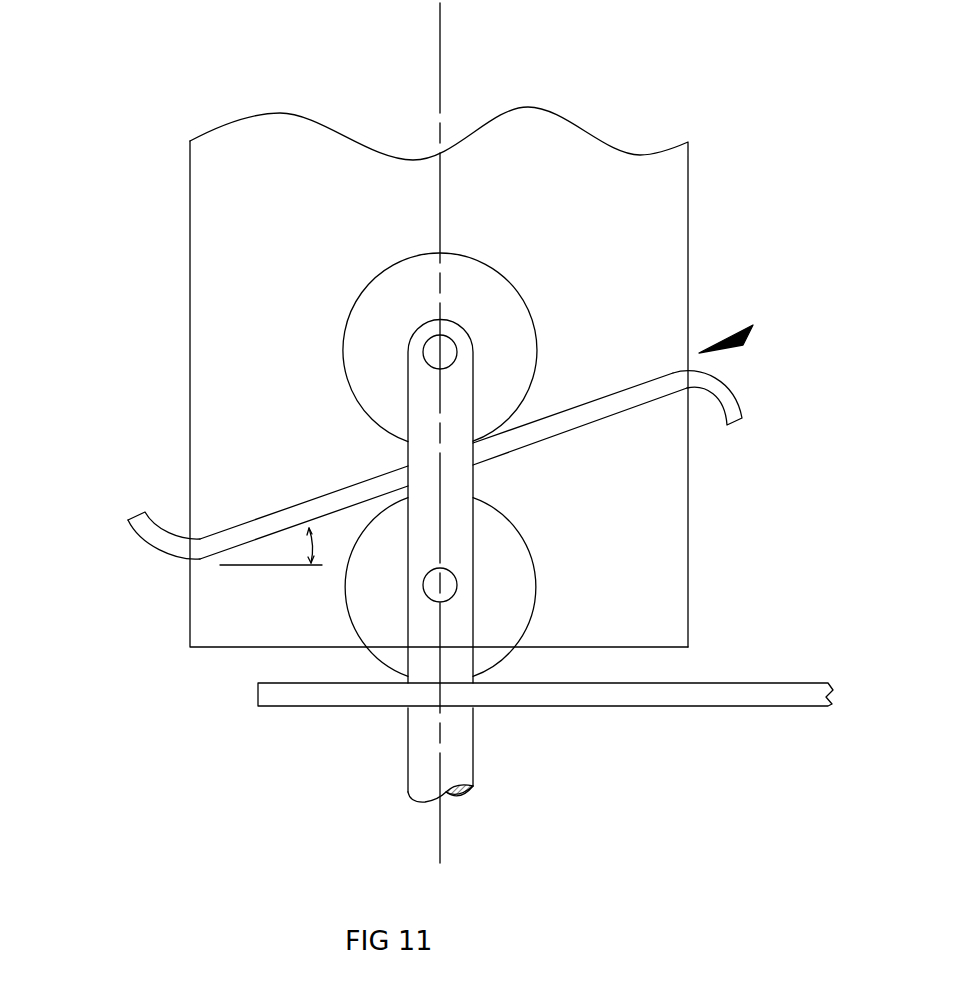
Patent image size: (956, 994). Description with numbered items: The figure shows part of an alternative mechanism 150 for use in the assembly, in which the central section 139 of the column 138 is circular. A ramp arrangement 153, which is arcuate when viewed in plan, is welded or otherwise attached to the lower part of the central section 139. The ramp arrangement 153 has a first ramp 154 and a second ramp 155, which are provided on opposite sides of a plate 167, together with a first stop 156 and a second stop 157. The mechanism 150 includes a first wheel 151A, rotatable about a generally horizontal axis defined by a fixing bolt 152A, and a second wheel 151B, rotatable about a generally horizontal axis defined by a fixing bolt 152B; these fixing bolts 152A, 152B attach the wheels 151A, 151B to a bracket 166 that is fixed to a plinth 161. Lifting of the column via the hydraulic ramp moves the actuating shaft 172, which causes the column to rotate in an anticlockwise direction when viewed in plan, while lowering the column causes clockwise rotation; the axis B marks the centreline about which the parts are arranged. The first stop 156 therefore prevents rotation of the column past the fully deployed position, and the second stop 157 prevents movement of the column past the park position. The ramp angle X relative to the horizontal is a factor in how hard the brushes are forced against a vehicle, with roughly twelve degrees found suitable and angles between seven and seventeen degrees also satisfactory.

The axis B is at (445, 79).
The column 138 is at (218, 152).
The central section 139 is at (218, 240).
The first wheel 151A is at (535, 328).
The fixing bolt 152A is at (432, 347).
The second wheel 151B is at (365, 600).
The fixing bolt 152B is at (445, 585).
The bracket 166 is at (413, 648).
The actuating shaft 172 is at (450, 755).
The plinth 161 is at (717, 692).
The second ramp 155 is at (305, 502).
The plate 167 is at (563, 413).
The first ramp 154 is at (567, 433).
The first stop 156 is at (699, 399).
The second stop 157 is at (172, 540).
The ramp arrangement 153 is at (185, 555).
The ramp angle X is at (298, 547).
The mechanism 150 is at (750, 333).